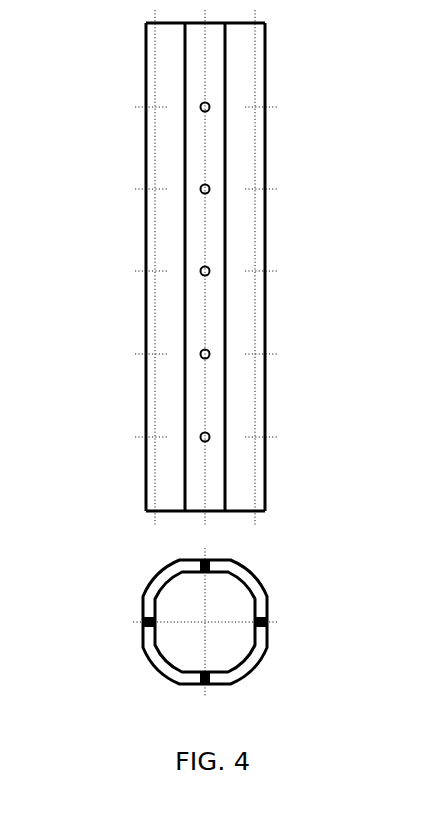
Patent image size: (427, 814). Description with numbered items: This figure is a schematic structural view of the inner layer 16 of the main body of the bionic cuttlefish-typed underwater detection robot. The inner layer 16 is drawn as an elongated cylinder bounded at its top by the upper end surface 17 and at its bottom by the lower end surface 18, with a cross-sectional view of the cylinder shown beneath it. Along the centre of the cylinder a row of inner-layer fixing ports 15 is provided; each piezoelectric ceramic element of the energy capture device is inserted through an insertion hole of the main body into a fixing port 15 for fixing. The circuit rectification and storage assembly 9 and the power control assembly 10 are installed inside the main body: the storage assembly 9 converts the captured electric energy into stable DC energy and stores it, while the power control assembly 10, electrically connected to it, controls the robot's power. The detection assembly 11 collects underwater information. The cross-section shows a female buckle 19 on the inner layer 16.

The circuit rectification and storage assembly 9 is at (211, 274).
The power control assembly 10 is at (203, 360).
The detection assembly 11 is at (200, 157).
The inner-layer fixing port 15 is at (209, 110).
The inner layer 16 is at (267, 210).
The upper end surface 17 is at (146, 22).
The lower end surface 18 is at (265, 512).
The female buckle 19 is at (267, 622).